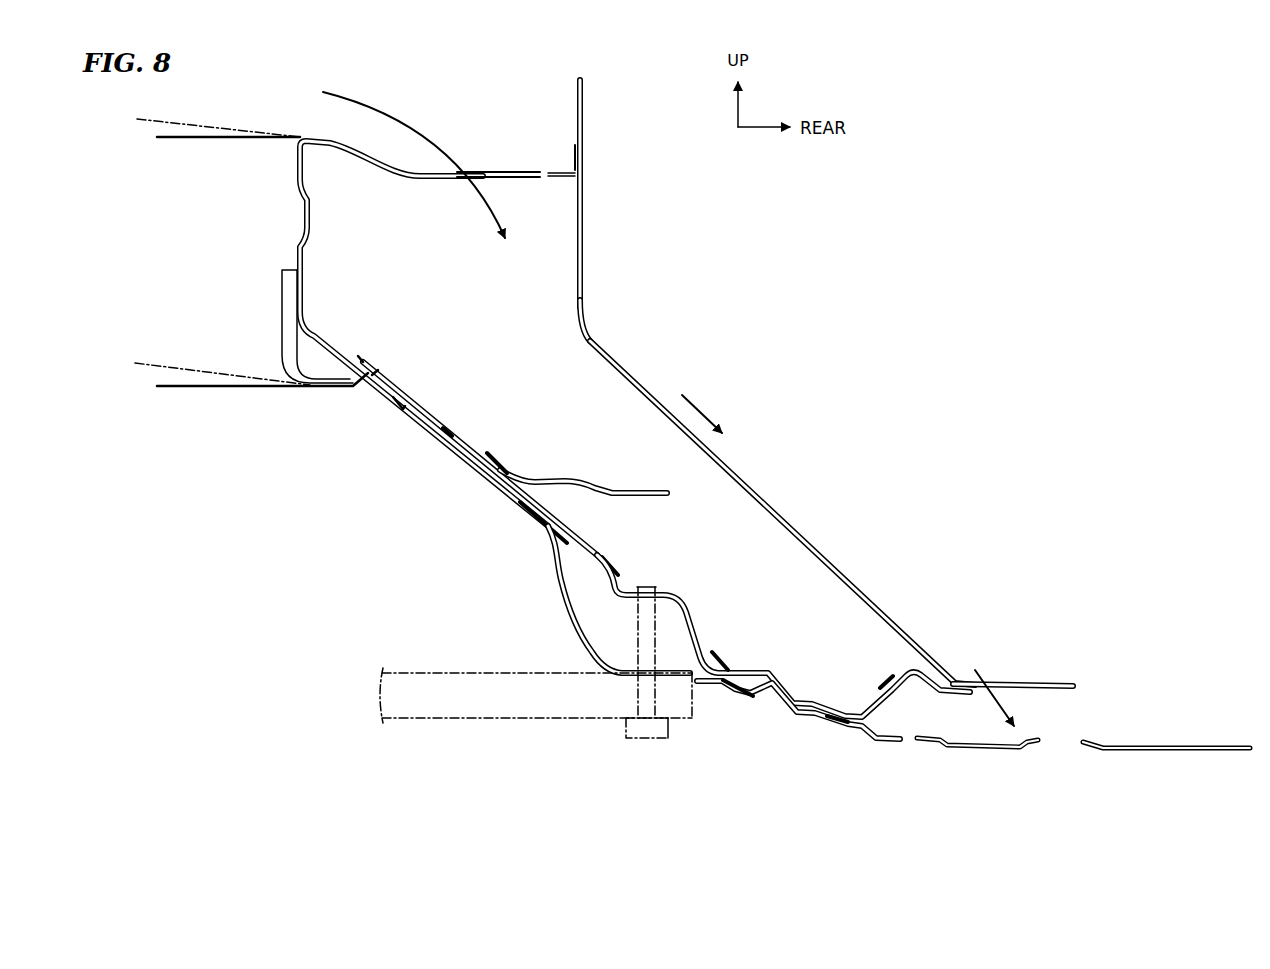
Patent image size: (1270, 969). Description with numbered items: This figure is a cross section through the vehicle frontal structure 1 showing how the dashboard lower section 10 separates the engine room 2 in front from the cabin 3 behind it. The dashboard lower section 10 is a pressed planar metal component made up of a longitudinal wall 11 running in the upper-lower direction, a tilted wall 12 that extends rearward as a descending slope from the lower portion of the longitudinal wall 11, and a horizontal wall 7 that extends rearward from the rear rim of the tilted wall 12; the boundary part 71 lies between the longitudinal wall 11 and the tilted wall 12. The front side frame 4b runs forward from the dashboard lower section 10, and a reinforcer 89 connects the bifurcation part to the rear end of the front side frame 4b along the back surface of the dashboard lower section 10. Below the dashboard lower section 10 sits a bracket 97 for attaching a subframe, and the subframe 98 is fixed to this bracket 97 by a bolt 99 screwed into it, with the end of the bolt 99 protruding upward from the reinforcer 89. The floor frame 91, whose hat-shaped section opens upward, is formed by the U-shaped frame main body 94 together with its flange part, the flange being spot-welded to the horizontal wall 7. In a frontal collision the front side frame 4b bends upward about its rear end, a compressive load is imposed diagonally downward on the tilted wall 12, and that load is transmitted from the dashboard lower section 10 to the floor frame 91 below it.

The vehicle frontal structure 1 is at (993, 255).
The engine room 2 is at (310, 574).
The cabin 3 is at (948, 384).
The front side frame 4b is at (195, 124).
The horizontal wall 7 is at (1048, 683).
The dashboard lower section 10 is at (716, 382).
The longitudinal wall 11 is at (582, 207).
The tilted wall 12 is at (770, 503).
The boundary part 71 is at (585, 327).
The reinforcer 89 is at (467, 448).
The floor frame 91 is at (1015, 752).
The frame main body 94 is at (985, 748).
The bracket for attaching a subframe 97 is at (570, 615).
The subframe 98 is at (500, 718).
The bolt 99 is at (645, 740).